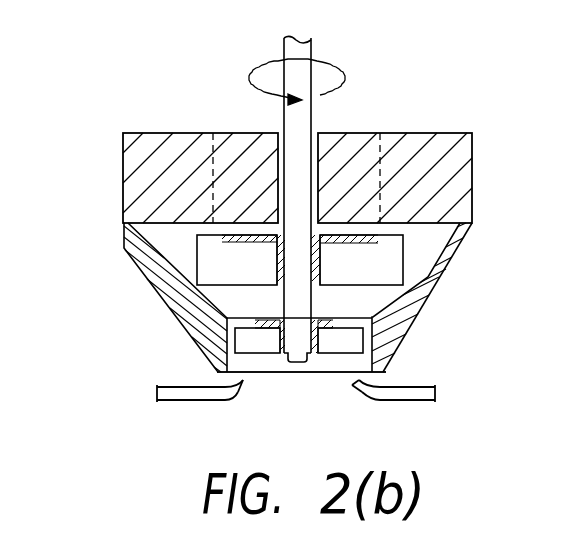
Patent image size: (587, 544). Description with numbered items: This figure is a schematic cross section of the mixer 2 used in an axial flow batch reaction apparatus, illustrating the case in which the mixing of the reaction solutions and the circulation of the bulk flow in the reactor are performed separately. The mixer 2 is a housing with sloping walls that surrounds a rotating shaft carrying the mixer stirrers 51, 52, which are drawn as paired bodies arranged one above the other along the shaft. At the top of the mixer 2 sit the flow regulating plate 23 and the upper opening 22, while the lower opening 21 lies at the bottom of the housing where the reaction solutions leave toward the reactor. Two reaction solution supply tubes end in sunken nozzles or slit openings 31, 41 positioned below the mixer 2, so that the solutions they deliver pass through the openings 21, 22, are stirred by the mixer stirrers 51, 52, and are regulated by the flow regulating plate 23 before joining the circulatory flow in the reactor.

The mixer 2 is at (170, 296).
The opening 21 is at (255, 375).
The opening 22 is at (137, 163).
The flow regulating plate 23 is at (463, 176).
The sunken nozzle or slit opening 31 is at (183, 401).
The sunken nozzle or slit opening 41 is at (390, 401).
The mixer stirrer 51 is at (384, 268).
The mixer stirrer 52 is at (347, 348).